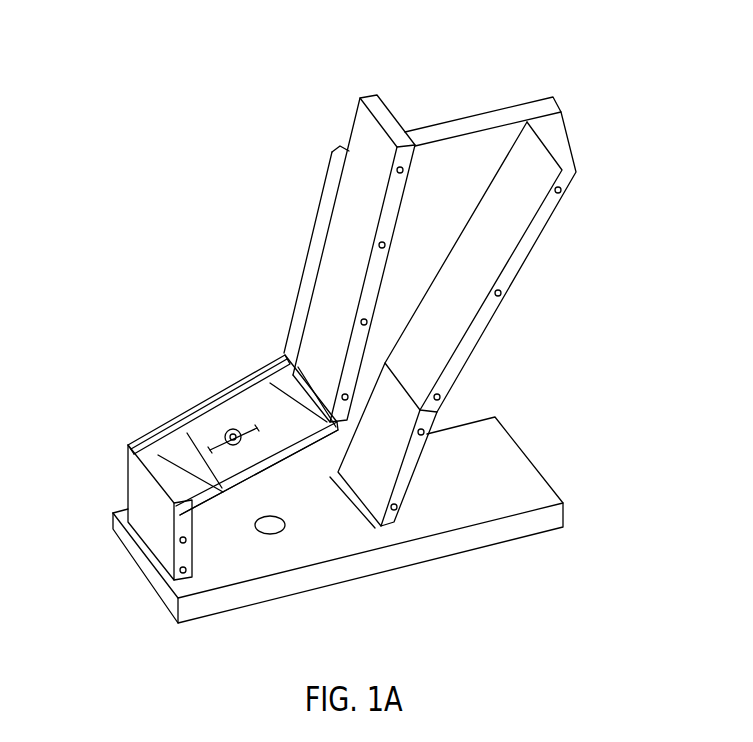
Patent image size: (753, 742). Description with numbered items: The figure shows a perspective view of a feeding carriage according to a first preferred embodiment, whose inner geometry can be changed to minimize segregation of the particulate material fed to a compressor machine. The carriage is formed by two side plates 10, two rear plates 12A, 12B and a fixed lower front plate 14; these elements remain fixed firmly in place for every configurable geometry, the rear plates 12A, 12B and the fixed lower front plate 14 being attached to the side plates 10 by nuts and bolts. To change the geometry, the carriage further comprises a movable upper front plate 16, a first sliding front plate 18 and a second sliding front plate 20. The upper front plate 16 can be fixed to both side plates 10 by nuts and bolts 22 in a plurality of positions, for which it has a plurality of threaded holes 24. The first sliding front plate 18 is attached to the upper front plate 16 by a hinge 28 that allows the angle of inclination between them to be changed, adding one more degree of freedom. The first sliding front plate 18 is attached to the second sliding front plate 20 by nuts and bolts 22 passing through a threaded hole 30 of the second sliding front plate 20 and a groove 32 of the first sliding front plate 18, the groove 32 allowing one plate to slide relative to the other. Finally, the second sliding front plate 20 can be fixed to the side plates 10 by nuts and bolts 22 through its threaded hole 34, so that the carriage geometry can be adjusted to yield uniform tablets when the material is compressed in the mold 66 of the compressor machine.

The side plates 10 is at (480, 162).
The rear plate 12A is at (540, 203).
The rear plate 12B is at (433, 460).
The fixed lower front plate 14 is at (167, 538).
The movable upper front plate 16 is at (380, 133).
The first sliding front plate 18 is at (277, 402).
The second sliding front plate 20 is at (187, 452).
The nuts and bolts 22 is at (235, 425).
The threaded holes 24 is at (423, 160).
The hinge 28 is at (307, 372).
The threaded hole 30 is at (198, 473).
The groove 32 is at (273, 435).
The threaded hole 34 is at (222, 520).
The mold 66 is at (296, 542).